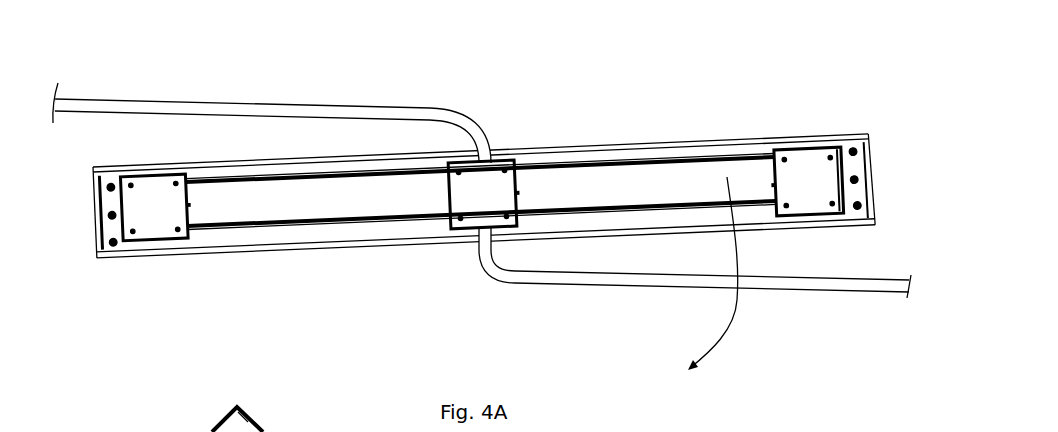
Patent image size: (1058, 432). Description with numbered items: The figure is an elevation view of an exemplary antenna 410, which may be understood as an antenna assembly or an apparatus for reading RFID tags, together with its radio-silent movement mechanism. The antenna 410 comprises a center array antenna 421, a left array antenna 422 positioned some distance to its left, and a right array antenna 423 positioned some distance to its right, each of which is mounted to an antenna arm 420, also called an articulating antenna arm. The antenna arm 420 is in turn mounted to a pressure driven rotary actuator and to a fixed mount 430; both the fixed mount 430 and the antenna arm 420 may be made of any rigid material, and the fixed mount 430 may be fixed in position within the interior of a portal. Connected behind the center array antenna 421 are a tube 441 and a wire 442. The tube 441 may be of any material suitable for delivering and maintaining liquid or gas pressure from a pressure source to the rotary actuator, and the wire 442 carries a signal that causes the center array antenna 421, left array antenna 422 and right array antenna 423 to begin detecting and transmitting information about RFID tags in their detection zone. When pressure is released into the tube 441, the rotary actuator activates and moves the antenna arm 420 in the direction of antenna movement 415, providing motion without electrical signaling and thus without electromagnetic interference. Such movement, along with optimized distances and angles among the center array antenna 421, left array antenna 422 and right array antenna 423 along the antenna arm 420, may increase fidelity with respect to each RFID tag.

The antenna 410 is at (489, 93).
The antenna movement 415 is at (737, 305).
The antenna arm 420 is at (644, 162).
The center array antenna 421 is at (458, 191).
The left array antenna 422 is at (143, 214).
The right array antenna 423 is at (828, 192).
The fixed mount 430 is at (810, 146).
The tube 441 is at (348, 98).
The wire 442 is at (836, 293).